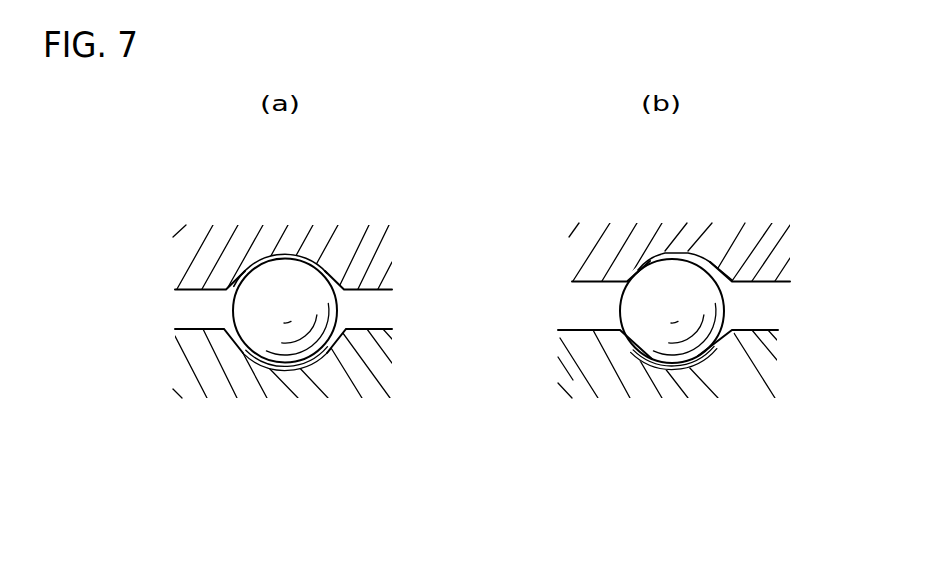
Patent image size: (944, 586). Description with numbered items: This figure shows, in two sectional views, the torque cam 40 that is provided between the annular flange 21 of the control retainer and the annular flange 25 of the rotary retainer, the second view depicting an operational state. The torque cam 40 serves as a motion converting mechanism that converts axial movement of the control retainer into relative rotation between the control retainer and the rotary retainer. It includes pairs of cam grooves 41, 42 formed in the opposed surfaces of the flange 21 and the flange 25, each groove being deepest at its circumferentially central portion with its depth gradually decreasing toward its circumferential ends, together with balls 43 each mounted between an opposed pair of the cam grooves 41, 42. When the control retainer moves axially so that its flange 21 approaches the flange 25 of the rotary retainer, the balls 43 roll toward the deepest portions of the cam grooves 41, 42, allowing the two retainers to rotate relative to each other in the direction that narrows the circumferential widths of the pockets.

The annular flange 21 is at (183, 260).
The annular flange 25 is at (192, 374).
The torque cam 40 is at (264, 256).
The cam groove 41 is at (315, 280).
The cam groove 42 is at (313, 343).
The ball 43 is at (275, 327).